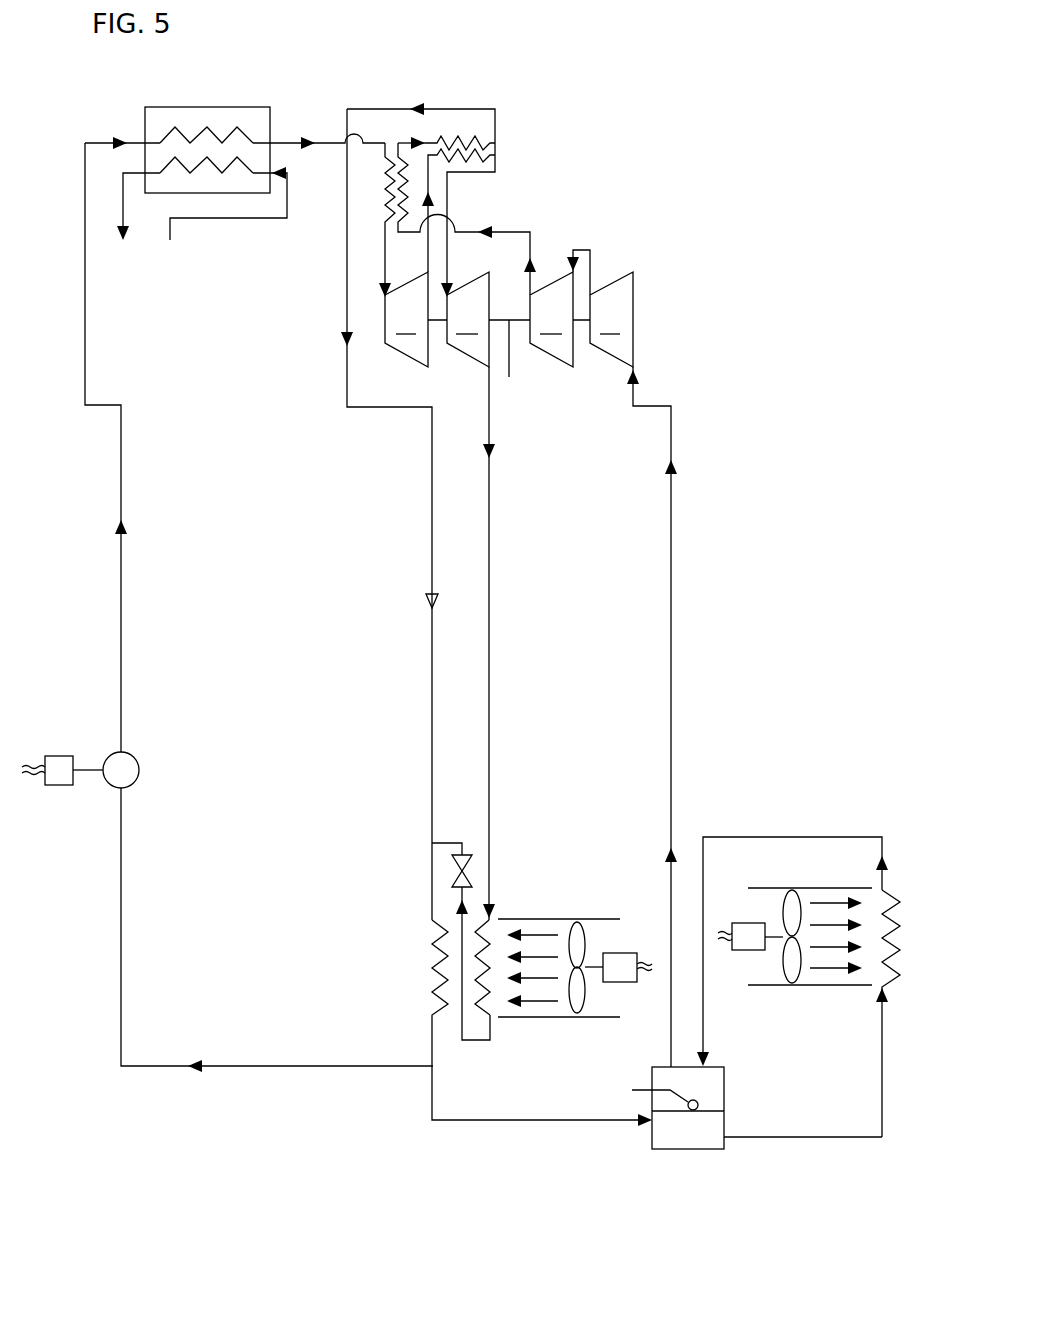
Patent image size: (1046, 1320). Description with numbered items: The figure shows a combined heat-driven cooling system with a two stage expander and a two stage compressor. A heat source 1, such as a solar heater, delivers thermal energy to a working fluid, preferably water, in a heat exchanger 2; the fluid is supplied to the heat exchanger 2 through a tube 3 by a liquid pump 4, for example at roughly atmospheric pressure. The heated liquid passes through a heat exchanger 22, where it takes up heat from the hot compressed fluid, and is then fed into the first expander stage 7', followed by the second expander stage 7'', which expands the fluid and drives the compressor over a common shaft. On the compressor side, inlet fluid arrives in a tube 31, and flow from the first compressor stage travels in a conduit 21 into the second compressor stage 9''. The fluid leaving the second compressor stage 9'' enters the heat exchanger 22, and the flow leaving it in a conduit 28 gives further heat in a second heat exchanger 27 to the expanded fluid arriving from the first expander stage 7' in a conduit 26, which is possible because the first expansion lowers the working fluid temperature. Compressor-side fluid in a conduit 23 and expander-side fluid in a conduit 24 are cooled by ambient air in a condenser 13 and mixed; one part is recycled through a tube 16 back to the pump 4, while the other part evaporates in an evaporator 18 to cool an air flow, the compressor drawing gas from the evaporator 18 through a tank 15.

The heat source 1 is at (222, 222).
The heat exchanger 2 is at (203, 106).
The tube 3 is at (121, 446).
The liquid pump 4 is at (128, 777).
The first expander stage 7' is at (406, 319).
The second expander stage 7'' is at (468, 319).
The second compressor stage 9'' is at (551, 319).
The condenser 13 is at (542, 908).
The tank 15 is at (692, 1128).
The tube 16 is at (121, 899).
The evaporator 18 is at (908, 903).
The conduit 21 is at (592, 265).
The heat exchanger 22 is at (366, 196).
The conduit 23 is at (430, 498).
The conduit 24 is at (489, 571).
The conduit 26 is at (430, 172).
The second heat exchanger 27 is at (460, 138).
The conduit 28 is at (403, 138).
The tube 31 is at (671, 604).